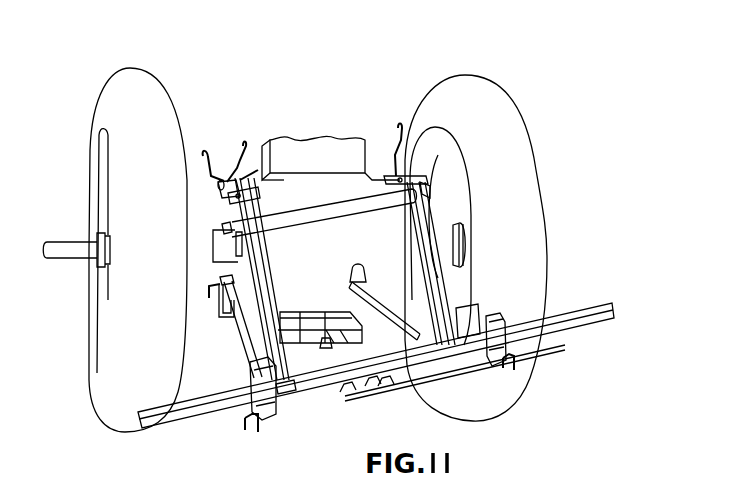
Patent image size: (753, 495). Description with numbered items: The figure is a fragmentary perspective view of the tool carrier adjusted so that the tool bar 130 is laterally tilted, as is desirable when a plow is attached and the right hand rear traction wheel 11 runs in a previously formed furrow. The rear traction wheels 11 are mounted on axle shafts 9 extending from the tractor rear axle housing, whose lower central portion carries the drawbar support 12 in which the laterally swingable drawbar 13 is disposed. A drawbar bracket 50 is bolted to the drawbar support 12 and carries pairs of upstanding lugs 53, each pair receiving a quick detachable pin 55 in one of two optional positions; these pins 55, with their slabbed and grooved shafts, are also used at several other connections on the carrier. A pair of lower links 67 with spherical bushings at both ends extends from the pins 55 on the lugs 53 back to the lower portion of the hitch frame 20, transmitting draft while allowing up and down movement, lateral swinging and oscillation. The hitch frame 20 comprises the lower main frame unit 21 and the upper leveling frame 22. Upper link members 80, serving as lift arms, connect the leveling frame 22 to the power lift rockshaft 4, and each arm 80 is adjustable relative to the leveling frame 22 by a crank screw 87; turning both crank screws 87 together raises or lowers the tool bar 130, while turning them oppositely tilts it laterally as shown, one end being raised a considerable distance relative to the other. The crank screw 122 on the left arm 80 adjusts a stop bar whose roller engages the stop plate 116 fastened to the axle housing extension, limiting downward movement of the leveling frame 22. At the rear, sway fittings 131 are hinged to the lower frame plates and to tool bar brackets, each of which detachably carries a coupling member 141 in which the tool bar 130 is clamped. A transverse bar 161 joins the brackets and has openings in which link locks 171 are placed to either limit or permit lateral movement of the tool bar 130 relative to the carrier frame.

The rear traction wheel 11 is at (108, 107).
The axle shaft 9 is at (60, 247).
The lower main frame unit 21 is at (438, 244).
The tool bar 130 is at (573, 307).
The leveling frame 22 is at (333, 200).
The hitch frame 20 is at (452, 284).
The lower link 67 is at (386, 290).
The drawbar support 12 is at (348, 338).
The drawbar 13 is at (324, 344).
The stop plate 116 is at (220, 248).
The power lift rockshaft 4 is at (218, 190).
The crank screw 122 is at (215, 166).
The crank screw 87 is at (244, 150).
The upper link member 80 is at (250, 195).
The upstanding lug 53 is at (220, 280).
The drawbar bracket 50 is at (224, 322).
The quick detachable pin 55 is at (230, 228).
The coupling member 141 is at (251, 386).
The sway fitting 131 is at (293, 390).
The transverse bar 161 is at (462, 366).
The link lock 171 is at (386, 386).